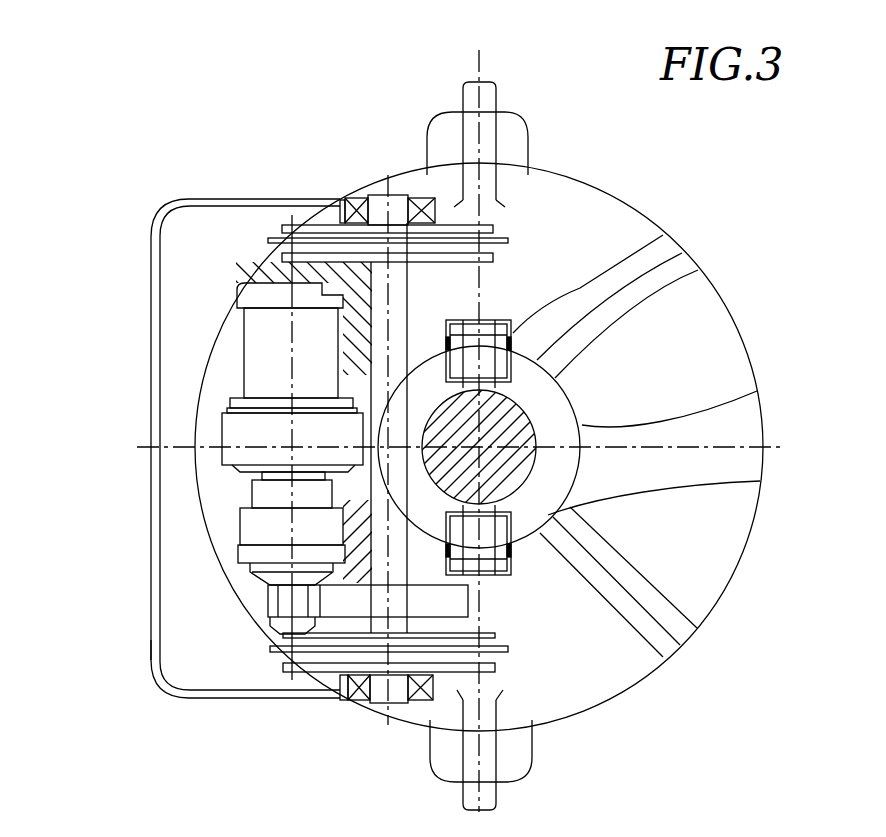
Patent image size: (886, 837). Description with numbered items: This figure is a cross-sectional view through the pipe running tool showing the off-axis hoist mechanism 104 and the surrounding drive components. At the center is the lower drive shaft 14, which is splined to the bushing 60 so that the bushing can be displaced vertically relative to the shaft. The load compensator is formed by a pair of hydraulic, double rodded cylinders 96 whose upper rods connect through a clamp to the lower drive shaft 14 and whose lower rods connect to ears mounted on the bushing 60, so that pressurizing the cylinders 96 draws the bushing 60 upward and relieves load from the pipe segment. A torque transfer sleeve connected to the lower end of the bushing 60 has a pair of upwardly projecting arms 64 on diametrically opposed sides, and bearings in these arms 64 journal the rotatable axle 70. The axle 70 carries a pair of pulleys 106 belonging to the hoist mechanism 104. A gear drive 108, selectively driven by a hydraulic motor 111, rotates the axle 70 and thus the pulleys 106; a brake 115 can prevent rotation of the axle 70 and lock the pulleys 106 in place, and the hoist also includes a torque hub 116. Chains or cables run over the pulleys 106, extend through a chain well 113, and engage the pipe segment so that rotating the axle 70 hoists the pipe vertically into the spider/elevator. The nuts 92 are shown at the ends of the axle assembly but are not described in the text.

The lower drive shaft 14 is at (570, 400).
The bushing 60 is at (533, 415).
The arms 64 is at (350, 197).
The axle 70 is at (398, 277).
The bolt 92 is at (436, 116).
The hydraulic double rodded cylinders 96 is at (657, 237).
The hoist mechanism 104 is at (215, 243).
The pulleys 106 is at (460, 223).
The gear drive 108 is at (270, 605).
The hydraulic motor 111 is at (263, 357).
The chain well 113 is at (157, 660).
The brake 115 is at (237, 427).
The torque hub 116 is at (260, 522).